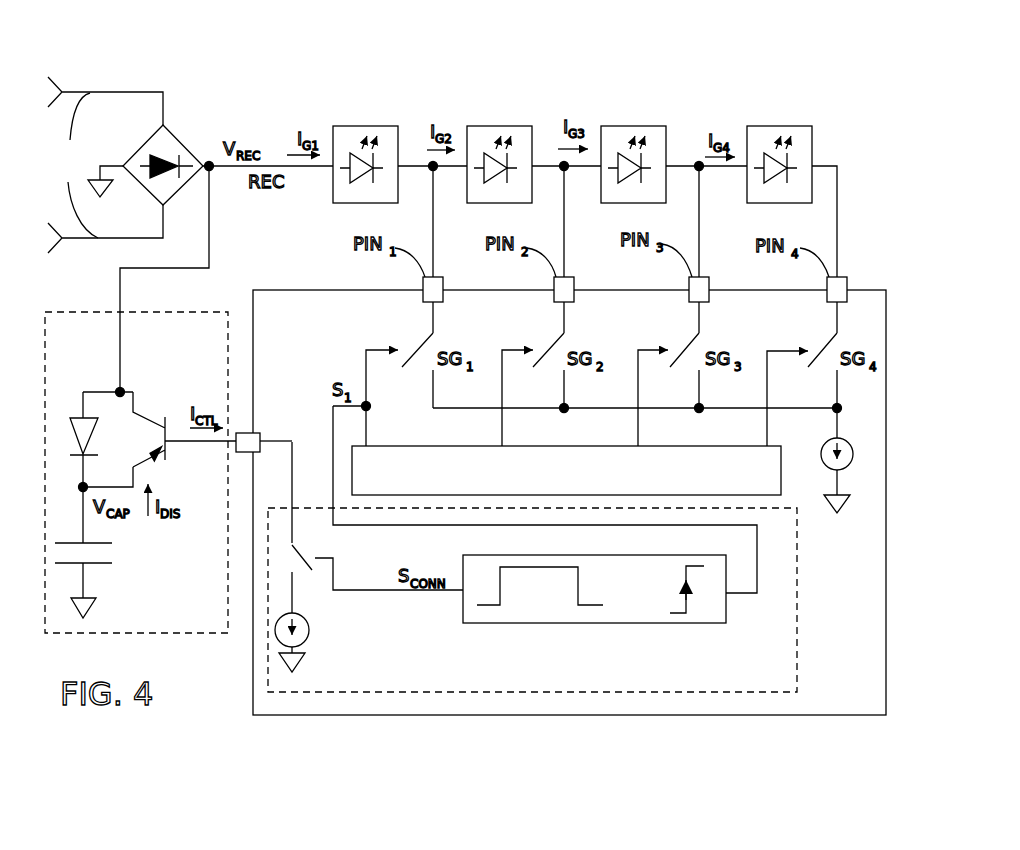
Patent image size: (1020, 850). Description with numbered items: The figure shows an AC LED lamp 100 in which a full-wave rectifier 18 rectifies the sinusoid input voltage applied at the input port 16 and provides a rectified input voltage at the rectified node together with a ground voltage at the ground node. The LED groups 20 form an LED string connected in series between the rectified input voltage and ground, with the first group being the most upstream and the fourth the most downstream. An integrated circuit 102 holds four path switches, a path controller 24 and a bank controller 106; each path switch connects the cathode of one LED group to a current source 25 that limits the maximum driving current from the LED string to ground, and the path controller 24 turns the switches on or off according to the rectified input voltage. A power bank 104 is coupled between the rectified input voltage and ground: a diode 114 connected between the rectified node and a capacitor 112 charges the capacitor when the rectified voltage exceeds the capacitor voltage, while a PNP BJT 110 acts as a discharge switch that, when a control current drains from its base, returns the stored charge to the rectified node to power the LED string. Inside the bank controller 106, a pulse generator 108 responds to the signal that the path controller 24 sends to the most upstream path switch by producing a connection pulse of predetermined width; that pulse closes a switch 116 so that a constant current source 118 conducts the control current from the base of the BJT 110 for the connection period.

The AC LED lamp 100 is at (273, 88).
The input port 16 is at (105, 165).
The full-wave rectifier 18 is at (173, 123).
The LED groups 20 is at (365, 125).
The integrated circuit 102 is at (322, 322).
The power bank 104 is at (101, 351).
The bank controller 106 is at (771, 673).
The pulse generator 108 is at (647, 594).
The PNP BJT 110 is at (184, 428).
The capacitor 112 is at (105, 556).
The diode 114 is at (103, 439).
The switch 116 is at (377, 516).
The constant current source 118 is at (312, 627).
The path controller 24 is at (588, 482).
The current source 25 is at (829, 474).